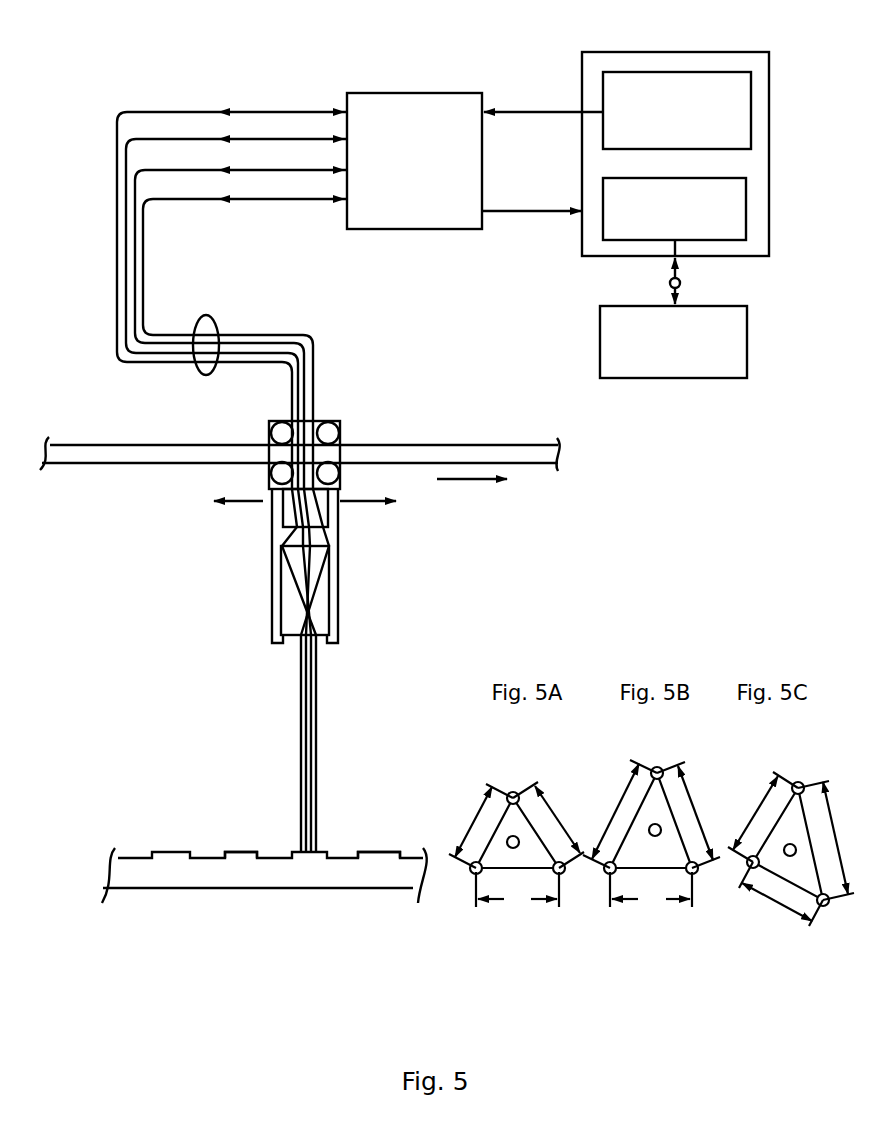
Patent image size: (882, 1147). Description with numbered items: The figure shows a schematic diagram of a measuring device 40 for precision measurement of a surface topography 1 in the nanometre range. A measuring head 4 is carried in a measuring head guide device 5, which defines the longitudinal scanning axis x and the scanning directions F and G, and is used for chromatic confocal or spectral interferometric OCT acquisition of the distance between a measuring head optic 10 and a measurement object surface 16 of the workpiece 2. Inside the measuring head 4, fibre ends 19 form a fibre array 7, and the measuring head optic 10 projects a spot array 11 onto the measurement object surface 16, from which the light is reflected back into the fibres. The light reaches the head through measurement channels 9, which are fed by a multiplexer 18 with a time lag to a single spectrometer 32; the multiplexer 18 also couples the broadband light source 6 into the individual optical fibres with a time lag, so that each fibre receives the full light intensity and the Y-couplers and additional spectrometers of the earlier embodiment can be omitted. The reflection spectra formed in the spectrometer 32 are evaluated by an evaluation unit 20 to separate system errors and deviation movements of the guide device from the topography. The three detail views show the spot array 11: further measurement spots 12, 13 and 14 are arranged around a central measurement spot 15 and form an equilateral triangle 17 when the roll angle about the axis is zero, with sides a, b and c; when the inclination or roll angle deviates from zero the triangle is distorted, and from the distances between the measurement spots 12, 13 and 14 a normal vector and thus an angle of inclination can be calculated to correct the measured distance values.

In FIG. 5, the surface topography 1 is at (383, 835).
In FIG. 5, the workpiece 2 is at (345, 880).
In FIG. 5, the measuring head 4 is at (339, 625).
In FIG. 5, the measuring head guide device 5 is at (448, 455).
In FIG. 5, the broadband light source 6 is at (667, 82).
In FIG. 5, the fibre array 7 is at (282, 513).
In FIG. 5, the measurement channels 9 is at (206, 375).
In FIG. 5, the measuring head optic 10 is at (323, 585).
In FIG. 5, the spot array 11 is at (293, 843).
In FIG. 5A, the spot array 11 is at (529, 778).
In FIG. 5B, the spot array 11 is at (666, 762).
In FIG. 5C, the spot array 11 is at (806, 778).
In FIG. 5A, the measurement spot 12 is at (513, 792).
In FIG. 5B, the measurement spot 12 is at (653, 768).
In FIG. 5C, the measurement spot 12 is at (795, 782).
In FIG. 5A, the measurement spot 13 is at (559, 875).
In FIG. 5B, the measurement spot 13 is at (692, 875).
In FIG. 5C, the measurement spot 13 is at (823, 906).
In FIG. 5A, the measurement spot 14 is at (476, 875).
In FIG. 5B, the measurement spot 14 is at (610, 875).
In FIG. 5C, the measurement spot 14 is at (750, 866).
In FIG. 5A, the central measurement spot 15 is at (509, 843).
In FIG. 5B, the central measurement spot 15 is at (651, 832).
In FIG. 5C, the central measurement spot 15 is at (786, 852).
In FIG. 5, the measurement object surface 16 is at (238, 852).
In FIG. 5, the equilateral triangle 17 is at (450, 820).
In FIG. 5, the multiplexer 18 is at (461, 213).
In FIG. 5, the fibre ends 19 is at (317, 528).
In FIG. 5, the evaluation unit 20 is at (727, 365).
In FIG. 5, the spectrometer 32 is at (613, 242).
In FIG. 5, the measuring device 40 is at (529, 532).